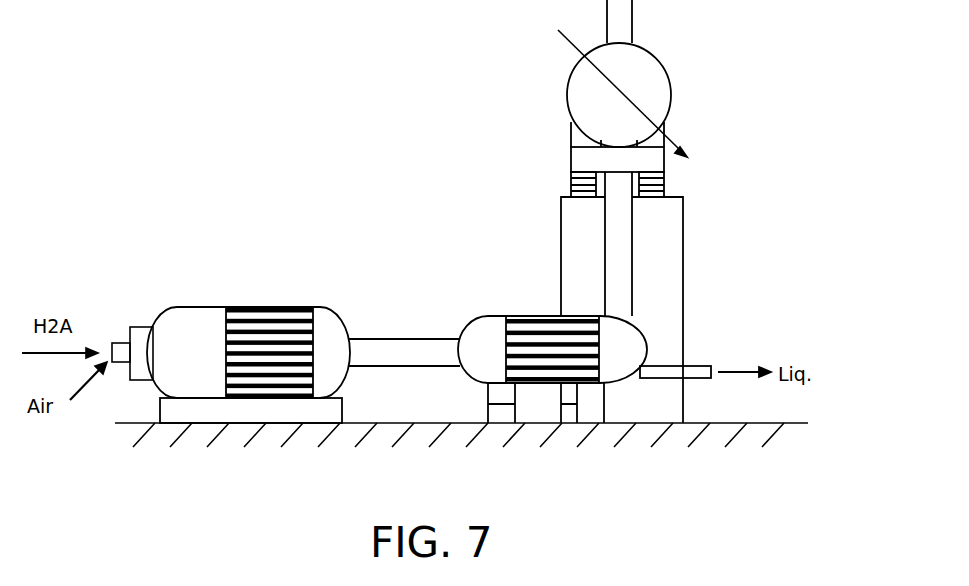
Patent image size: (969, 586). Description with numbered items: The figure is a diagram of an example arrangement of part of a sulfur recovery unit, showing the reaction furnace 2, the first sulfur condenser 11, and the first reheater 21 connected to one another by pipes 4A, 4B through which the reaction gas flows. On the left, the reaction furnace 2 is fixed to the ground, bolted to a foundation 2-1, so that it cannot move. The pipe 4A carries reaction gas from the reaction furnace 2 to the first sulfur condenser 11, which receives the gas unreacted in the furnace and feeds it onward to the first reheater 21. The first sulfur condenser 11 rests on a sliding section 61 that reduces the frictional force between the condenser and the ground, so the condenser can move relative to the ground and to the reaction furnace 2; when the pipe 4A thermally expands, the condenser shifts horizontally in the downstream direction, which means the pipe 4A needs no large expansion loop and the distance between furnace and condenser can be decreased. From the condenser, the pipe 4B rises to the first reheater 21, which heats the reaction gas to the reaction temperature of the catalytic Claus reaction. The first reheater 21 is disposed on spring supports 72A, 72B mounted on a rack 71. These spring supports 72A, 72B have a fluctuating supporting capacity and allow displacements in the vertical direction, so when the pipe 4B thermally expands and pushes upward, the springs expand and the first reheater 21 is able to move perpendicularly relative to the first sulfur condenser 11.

The reaction furnace 2 is at (248, 307).
The foundation 2-1 is at (343, 412).
The pipe 4A is at (410, 339).
The pipe 4B is at (632, 262).
The first sulfur condenser 11 is at (545, 316).
The first reheater 21 is at (568, 100).
The sliding section 61 is at (616, 388).
The rack 71 is at (560, 247).
The spring support 72A is at (571, 183).
The spring support 72B is at (664, 183).